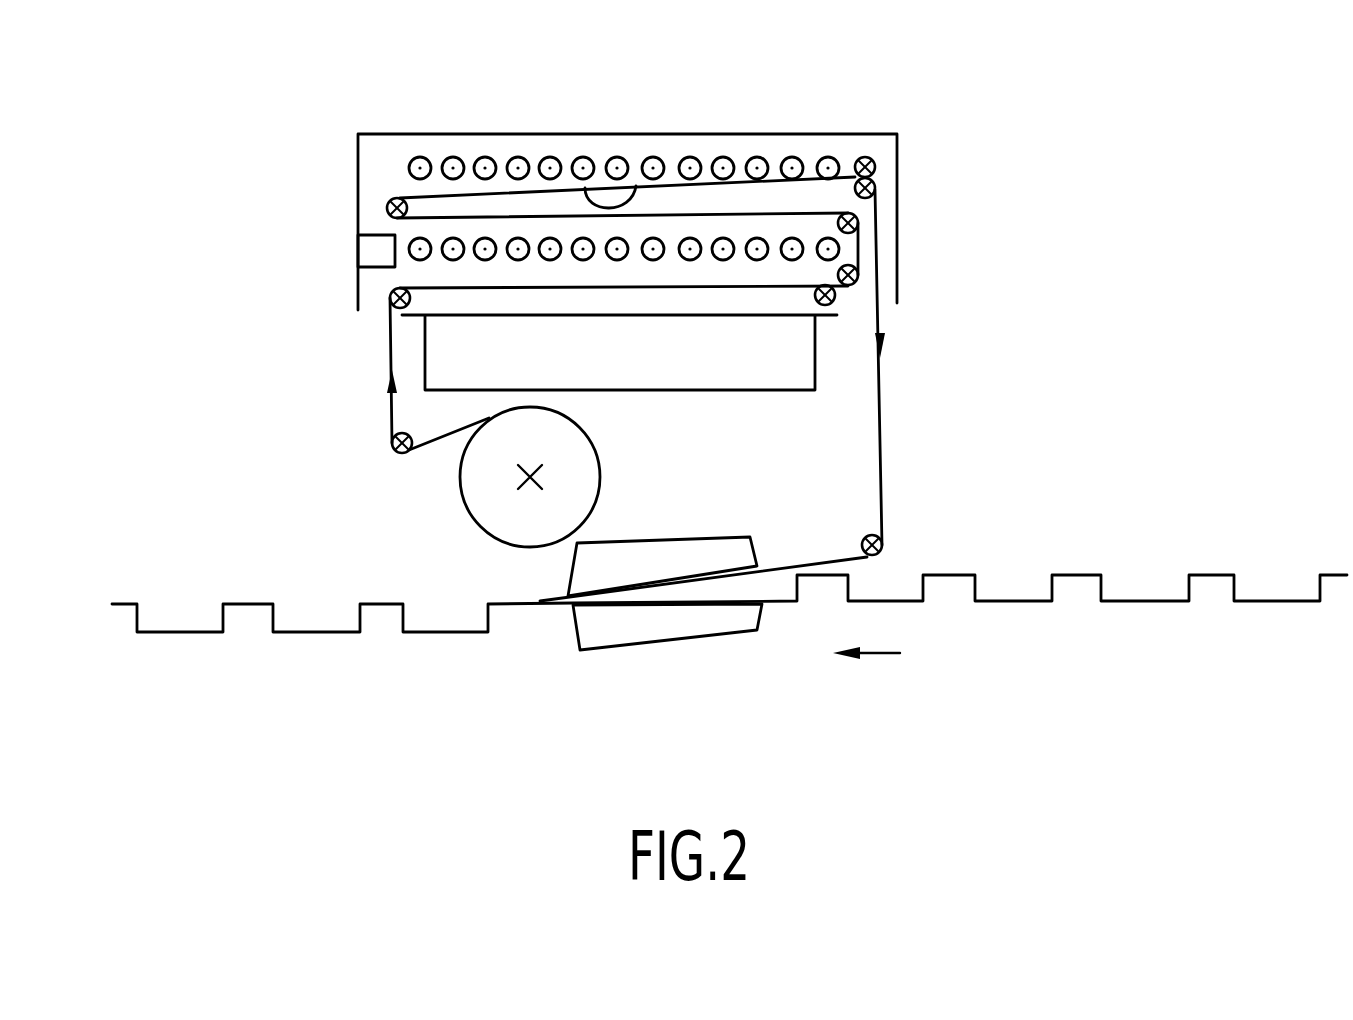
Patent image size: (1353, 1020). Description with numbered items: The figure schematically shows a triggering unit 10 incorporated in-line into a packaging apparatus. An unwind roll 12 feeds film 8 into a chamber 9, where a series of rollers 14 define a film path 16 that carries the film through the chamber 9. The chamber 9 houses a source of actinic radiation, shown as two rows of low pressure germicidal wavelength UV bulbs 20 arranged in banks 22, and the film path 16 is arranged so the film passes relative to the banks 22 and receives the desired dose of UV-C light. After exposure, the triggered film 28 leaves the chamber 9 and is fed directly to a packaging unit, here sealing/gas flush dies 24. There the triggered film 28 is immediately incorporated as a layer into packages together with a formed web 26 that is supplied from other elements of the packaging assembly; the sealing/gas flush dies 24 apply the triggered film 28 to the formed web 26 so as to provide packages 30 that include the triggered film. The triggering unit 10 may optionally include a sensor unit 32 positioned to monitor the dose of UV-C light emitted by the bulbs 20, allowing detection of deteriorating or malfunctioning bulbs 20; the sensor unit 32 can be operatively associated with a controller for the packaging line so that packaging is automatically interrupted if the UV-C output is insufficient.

The film 8 is at (425, 446).
The chamber 9 is at (296, 137).
The triggering unit 10 is at (908, 118).
The unwind roll 12 is at (475, 512).
The rollers 14 is at (392, 200).
The film path 16 is at (636, 186).
The UV bulbs 20 is at (526, 161).
The banks 22 is at (632, 136).
The sealing/gas flush dies 24 is at (595, 685).
The formed web 26 is at (1150, 556).
The triggered film 28 is at (883, 450).
The packages 30 is at (404, 655).
The sensor unit 32 is at (368, 252).